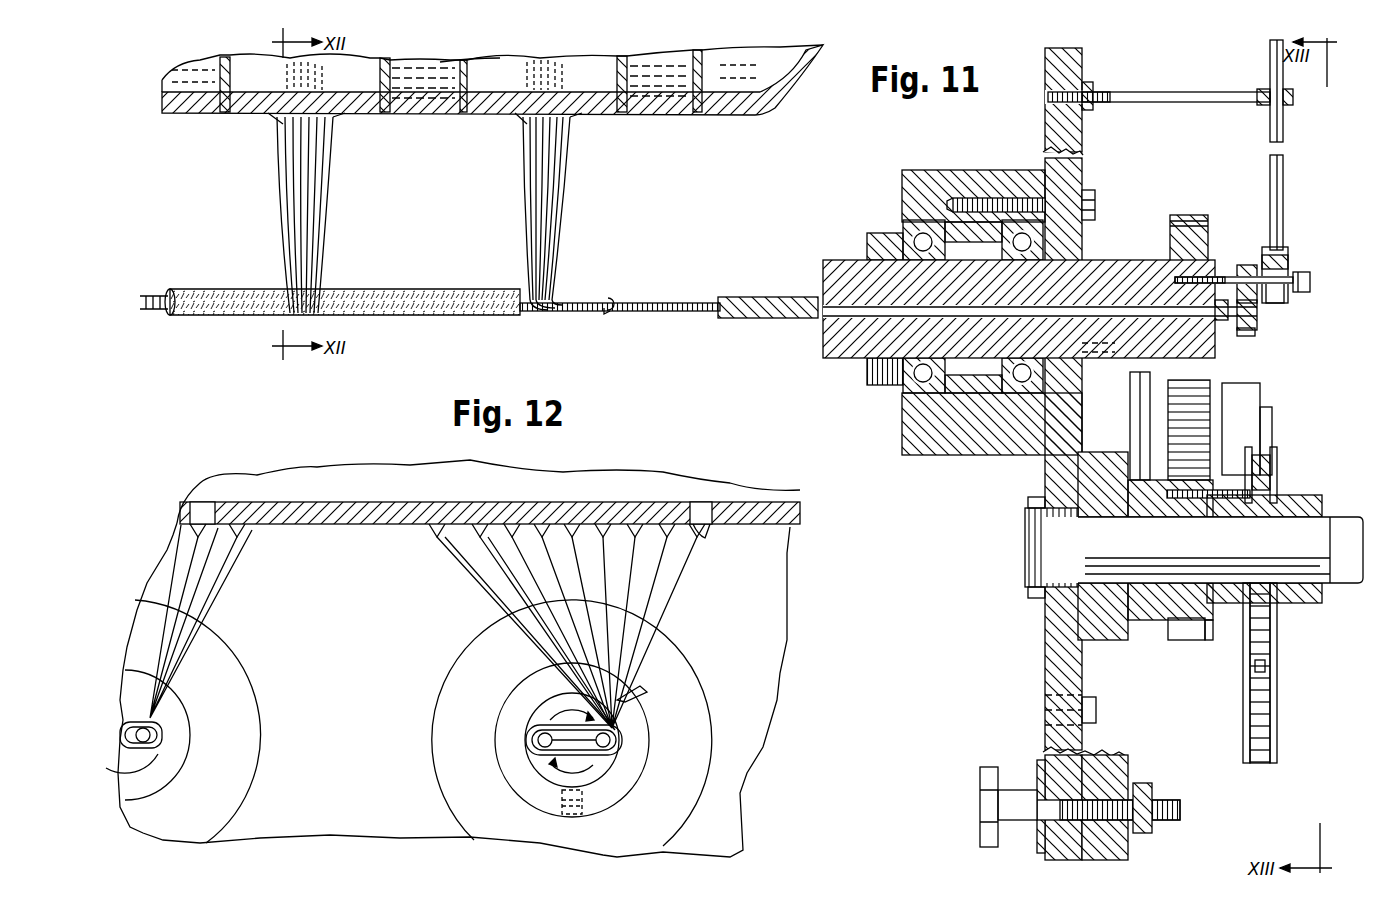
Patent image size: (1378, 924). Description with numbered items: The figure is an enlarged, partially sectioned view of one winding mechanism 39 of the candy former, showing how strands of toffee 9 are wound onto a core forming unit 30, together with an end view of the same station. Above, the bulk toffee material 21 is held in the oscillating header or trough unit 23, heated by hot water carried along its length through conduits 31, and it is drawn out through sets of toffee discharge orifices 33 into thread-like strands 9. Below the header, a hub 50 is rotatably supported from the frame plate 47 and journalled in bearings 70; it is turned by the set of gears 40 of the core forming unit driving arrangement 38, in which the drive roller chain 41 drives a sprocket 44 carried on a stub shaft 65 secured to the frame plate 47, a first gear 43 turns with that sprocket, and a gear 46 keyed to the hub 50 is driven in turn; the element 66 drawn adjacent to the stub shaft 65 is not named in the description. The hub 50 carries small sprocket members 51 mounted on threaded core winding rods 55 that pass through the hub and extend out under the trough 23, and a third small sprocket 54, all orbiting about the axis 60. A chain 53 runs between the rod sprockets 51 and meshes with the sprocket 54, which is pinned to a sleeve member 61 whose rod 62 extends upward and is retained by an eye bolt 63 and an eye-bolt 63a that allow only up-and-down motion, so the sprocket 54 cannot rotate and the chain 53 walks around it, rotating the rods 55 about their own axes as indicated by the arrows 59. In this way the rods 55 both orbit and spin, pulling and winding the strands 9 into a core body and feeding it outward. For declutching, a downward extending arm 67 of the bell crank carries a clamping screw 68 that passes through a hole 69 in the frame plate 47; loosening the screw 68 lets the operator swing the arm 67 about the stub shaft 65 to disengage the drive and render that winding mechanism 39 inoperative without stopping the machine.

In FIG. 11, the strands of toffee 9 is at (290, 262).
In FIG. 12, the strands of toffee 9 is at (645, 692).
In FIG. 11, the bulk toffee material 21 is at (588, 85).
In FIG. 12, the bulk toffee material 21 is at (416, 493).
In FIG. 11, the header or trough unit 23 is at (698, 117).
In FIG. 11, the core forming unit 30 is at (898, 183).
In FIG. 12, the core forming unit 30 is at (680, 640).
In FIG. 11, the conduits 31 is at (476, 72).
In FIG. 12, the toffee discharge orifices 33 is at (707, 540).
In FIG. 11, the core forming unit driving arrangement 38 is at (1279, 682).
In FIG. 11, the winding mechanism 39 is at (755, 320).
In FIG. 11, the set of gears 40 is at (1207, 642).
In FIG. 11, the drive roller chain 41 is at (1262, 709).
In FIG. 11, the first gear 43 is at (1173, 620).
In FIG. 11, the sprocket 44 is at (1274, 488).
In FIG. 11, the gear 46 is at (1185, 222).
In FIG. 11, the frame plate 47 is at (1043, 465).
In FIG. 11, the hub 50 is at (836, 358).
In FIG. 12, the hub 50 is at (600, 775).
In FIG. 11, the small sprocket member 51 is at (1258, 320).
In FIG. 11, the chain 53 is at (1254, 336).
In FIG. 11, the third small sprocket 54 is at (1247, 265).
In FIG. 11, the threaded core winding rod 55 is at (662, 315).
In FIG. 12, the threaded core winding rod 55 is at (528, 739).
In FIG. 12, the arrows 59 is at (560, 700).
In FIG. 12, the axis 60 is at (575, 712).
In FIG. 11, the sleeve member 61 is at (1290, 263).
In FIG. 11, the rod 62 is at (1283, 155).
In FIG. 11, the eye bolt 63 is at (1312, 282).
In FIG. 11, the eye-bolt 63a is at (1293, 97).
In FIG. 11, the stub shaft 65 is at (1318, 530).
In FIG. 11, the shaft hub 66 is at (1090, 483).
In FIG. 11, the downward extending arm 67 is at (1128, 852).
In FIG. 11, the clamping screw 68 is at (1020, 790).
In FIG. 11, the hole 69 is at (1040, 850).
In FIG. 11, the bearings 70 is at (912, 236).